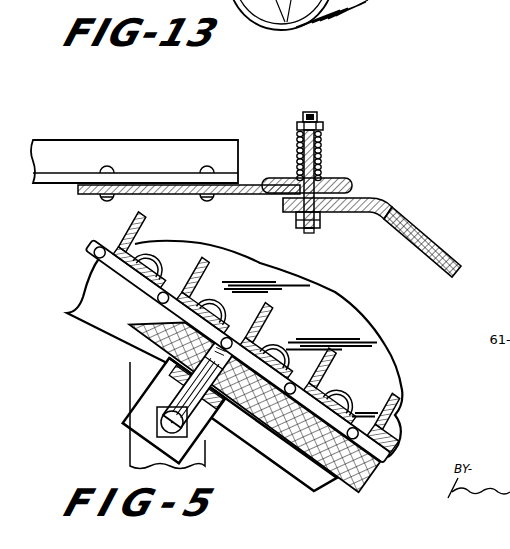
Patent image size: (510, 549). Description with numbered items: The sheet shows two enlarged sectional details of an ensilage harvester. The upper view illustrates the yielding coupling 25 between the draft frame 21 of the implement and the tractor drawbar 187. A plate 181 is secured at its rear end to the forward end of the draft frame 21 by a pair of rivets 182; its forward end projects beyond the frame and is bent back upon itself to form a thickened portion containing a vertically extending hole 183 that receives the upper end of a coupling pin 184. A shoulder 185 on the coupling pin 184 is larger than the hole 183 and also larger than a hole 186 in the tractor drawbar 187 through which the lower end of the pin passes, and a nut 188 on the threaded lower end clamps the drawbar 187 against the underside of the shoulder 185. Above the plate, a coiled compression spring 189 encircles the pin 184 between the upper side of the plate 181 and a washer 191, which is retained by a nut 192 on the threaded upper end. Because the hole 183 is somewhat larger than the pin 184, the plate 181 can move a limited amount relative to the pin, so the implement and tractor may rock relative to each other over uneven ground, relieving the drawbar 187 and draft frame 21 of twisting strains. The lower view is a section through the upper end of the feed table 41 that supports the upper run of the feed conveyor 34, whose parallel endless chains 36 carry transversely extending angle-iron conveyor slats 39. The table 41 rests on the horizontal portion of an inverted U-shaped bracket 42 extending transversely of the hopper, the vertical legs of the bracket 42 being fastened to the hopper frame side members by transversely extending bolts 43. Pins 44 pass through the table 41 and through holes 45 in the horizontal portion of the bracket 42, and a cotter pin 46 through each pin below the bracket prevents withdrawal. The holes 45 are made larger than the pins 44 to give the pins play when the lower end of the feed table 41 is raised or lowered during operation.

In FIG. 13, the draft frame 21 is at (57, 137).
In FIG. 13, the rivets 182 is at (205, 171).
In FIG. 13, the plate 181 is at (237, 195).
In FIG. 13, the vertically extending hole 183 is at (323, 182).
In FIG. 13, the coupling pin 184 is at (322, 136).
In FIG. 13, the coiled compression spring 189 is at (322, 154).
In FIG. 13, the washer 191 is at (298, 129).
In FIG. 13, the nut 192 is at (306, 112).
In FIG. 13, the coupling 25 is at (366, 165).
In FIG. 13, the shoulder 185 is at (372, 219).
In FIG. 13, the hole 186 is at (357, 211).
In FIG. 13, the tractor drawbar 187 is at (404, 226).
In FIG. 13, the nut 188 is at (318, 222).
In FIG. 5, the feed conveyor 34 is at (357, 378).
In FIG. 5, the endless chains 36 is at (388, 456).
In FIG. 5, the conveyor slats 39 is at (262, 332).
In FIG. 5, the feed table 41 is at (338, 468).
In FIG. 5, the inverted U-shaped bracket 42 is at (141, 416).
In FIG. 5, the bolts 43 is at (165, 424).
In FIG. 5, the pins 44 is at (201, 428).
In FIG. 5, the holes 45 is at (222, 403).
In FIG. 5, the cotter pin 46 is at (162, 374).